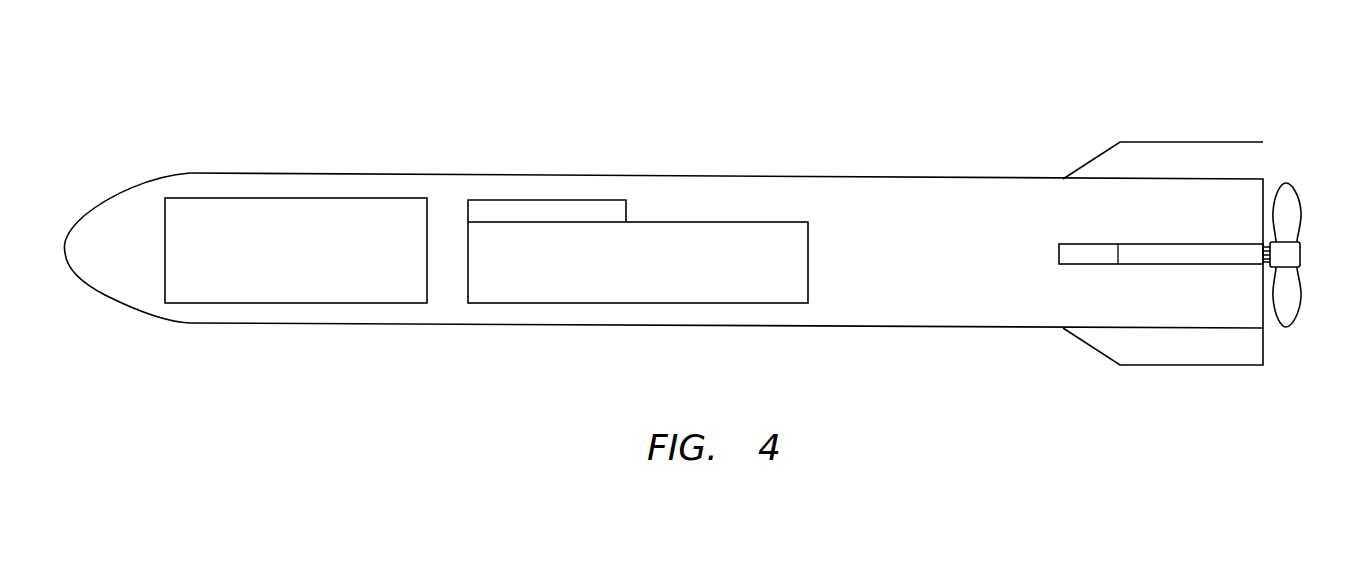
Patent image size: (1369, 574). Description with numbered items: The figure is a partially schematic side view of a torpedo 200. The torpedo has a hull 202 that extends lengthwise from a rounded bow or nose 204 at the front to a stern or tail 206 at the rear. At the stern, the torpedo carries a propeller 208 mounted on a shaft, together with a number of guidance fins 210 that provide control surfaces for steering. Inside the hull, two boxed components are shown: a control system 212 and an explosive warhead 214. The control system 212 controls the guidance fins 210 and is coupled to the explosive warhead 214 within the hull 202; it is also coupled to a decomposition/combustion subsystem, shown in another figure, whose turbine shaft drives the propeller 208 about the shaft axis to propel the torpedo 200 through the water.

The torpedo 200 is at (808, 118).
The hull 202 is at (513, 175).
The nose 204 is at (68, 216).
The tail 206 is at (1272, 334).
The propeller 208 is at (1285, 195).
The guidance fins 210 is at (1141, 152).
The control system 212 is at (570, 273).
The explosive warhead 214 is at (320, 265).